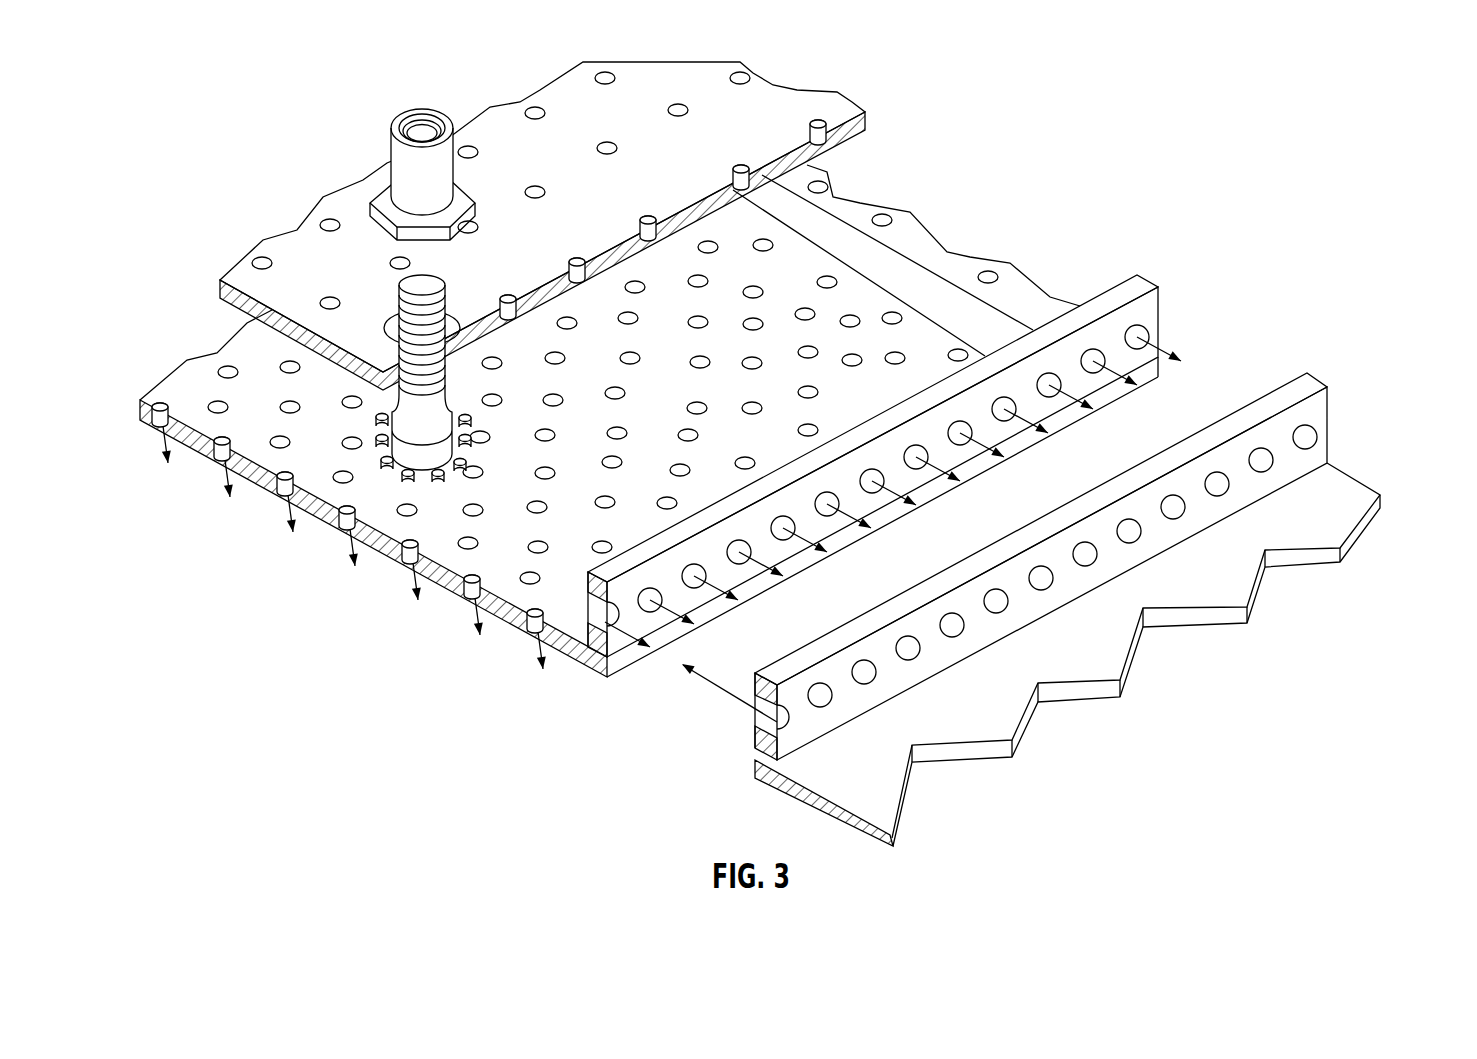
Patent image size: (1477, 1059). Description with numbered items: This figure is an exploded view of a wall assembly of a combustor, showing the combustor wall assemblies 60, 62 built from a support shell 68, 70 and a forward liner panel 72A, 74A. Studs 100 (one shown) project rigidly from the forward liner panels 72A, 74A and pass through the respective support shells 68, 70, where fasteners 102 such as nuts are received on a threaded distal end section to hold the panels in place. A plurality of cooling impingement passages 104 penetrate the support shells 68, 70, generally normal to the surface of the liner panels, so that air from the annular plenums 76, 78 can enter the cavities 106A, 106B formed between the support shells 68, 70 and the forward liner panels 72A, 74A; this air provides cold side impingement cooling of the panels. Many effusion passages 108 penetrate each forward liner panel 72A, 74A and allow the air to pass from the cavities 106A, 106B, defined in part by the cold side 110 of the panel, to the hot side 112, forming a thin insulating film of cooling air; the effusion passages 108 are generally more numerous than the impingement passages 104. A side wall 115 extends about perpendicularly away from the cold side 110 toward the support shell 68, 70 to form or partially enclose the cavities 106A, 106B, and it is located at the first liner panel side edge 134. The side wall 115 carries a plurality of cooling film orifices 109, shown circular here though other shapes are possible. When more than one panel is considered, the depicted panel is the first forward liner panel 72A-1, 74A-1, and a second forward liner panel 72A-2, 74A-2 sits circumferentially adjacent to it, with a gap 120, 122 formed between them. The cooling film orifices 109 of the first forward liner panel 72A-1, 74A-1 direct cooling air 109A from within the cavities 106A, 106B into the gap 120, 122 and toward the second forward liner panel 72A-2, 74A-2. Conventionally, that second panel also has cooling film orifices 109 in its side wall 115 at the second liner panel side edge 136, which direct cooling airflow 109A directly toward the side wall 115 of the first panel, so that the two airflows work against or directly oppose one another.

The combustor wall assembly 60 is at (765, 440).
The combustor wall assembly 62 is at (1062, 68).
The support shell 68 is at (567, 212).
The support shell 70 is at (814, 68).
The forward liner panel 72A is at (873, 464).
The forward liner panel 74A is at (955, 222).
The first forward liner panel 72A-1 is at (961, 428).
The first forward liner panel 74A-1 is at (1156, 148).
The second forward liner panel 72A-2 is at (1064, 560).
The second forward liner panel 74A-2 is at (1356, 458).
The annular plenum 76 is at (542, 219).
The annular plenum 78 is at (337, 153).
The stud 100 is at (407, 288).
The fastener 102 is at (423, 112).
The cooling impingement passage 104 is at (535, 112).
The cavity 106A is at (618, 492).
The cavity 106B is at (176, 325).
The effusion passage 108 is at (884, 216).
The cooling film orifice 109 is at (1147, 345).
The cooling air 109A is at (1177, 340).
The cold side 110 is at (168, 385).
The hot side 112 is at (208, 458).
The side wall 115 is at (1138, 283).
The gap 120 is at (1067, 560).
The gap 122 is at (1217, 392).
The first liner panel side edge 134 is at (620, 660).
The second liner panel side edge 136 is at (757, 755).